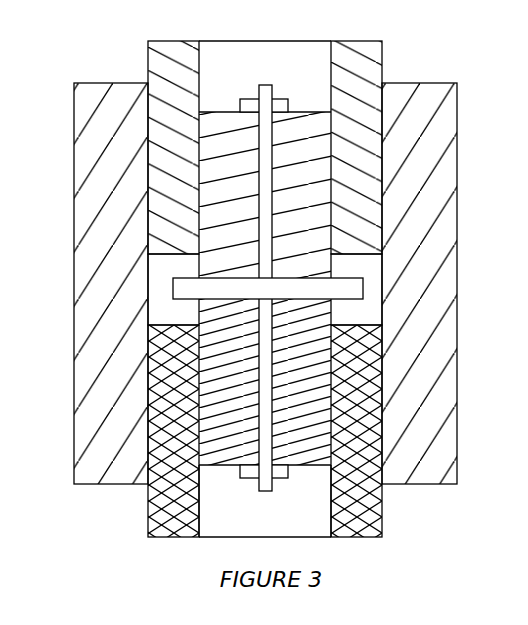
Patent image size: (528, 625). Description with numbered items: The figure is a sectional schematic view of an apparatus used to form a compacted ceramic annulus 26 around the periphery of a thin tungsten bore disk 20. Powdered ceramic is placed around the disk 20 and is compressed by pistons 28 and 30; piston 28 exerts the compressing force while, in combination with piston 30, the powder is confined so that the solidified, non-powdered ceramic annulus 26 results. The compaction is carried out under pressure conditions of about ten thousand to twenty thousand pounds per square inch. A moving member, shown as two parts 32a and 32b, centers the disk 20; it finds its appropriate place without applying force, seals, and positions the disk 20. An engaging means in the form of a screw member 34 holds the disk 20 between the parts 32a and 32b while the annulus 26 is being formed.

The disk member 20 is at (357, 312).
The ceramic annulus 26 is at (358, 288).
The piston 28 is at (158, 530).
The piston 30 is at (83, 381).
The moving member part 32a is at (226, 453).
The moving member part 32b is at (307, 127).
The screw member 34 is at (268, 438).